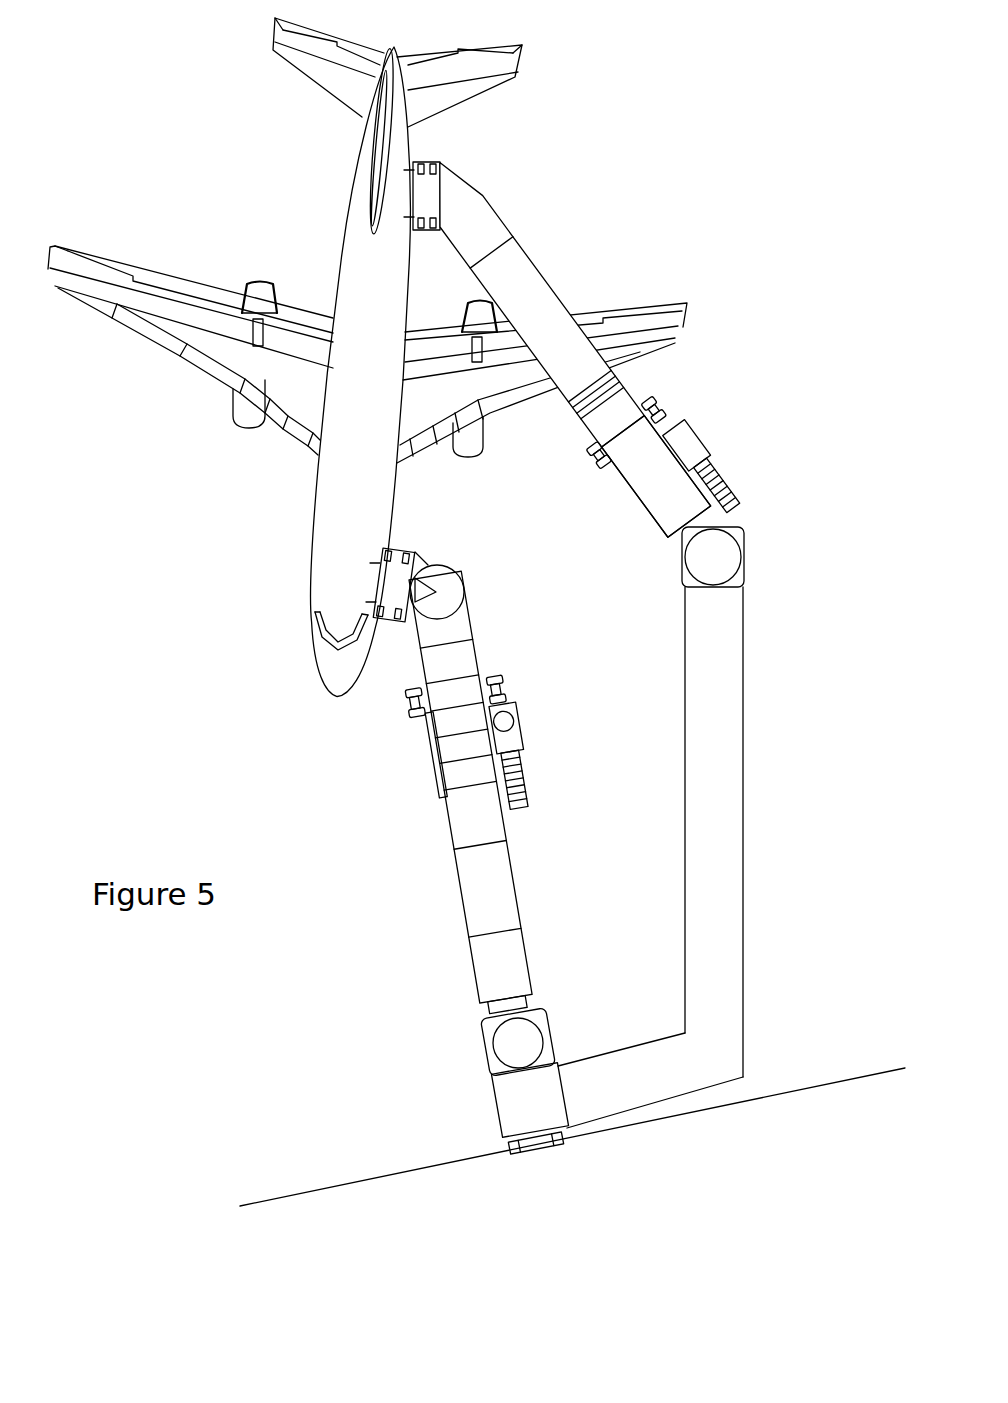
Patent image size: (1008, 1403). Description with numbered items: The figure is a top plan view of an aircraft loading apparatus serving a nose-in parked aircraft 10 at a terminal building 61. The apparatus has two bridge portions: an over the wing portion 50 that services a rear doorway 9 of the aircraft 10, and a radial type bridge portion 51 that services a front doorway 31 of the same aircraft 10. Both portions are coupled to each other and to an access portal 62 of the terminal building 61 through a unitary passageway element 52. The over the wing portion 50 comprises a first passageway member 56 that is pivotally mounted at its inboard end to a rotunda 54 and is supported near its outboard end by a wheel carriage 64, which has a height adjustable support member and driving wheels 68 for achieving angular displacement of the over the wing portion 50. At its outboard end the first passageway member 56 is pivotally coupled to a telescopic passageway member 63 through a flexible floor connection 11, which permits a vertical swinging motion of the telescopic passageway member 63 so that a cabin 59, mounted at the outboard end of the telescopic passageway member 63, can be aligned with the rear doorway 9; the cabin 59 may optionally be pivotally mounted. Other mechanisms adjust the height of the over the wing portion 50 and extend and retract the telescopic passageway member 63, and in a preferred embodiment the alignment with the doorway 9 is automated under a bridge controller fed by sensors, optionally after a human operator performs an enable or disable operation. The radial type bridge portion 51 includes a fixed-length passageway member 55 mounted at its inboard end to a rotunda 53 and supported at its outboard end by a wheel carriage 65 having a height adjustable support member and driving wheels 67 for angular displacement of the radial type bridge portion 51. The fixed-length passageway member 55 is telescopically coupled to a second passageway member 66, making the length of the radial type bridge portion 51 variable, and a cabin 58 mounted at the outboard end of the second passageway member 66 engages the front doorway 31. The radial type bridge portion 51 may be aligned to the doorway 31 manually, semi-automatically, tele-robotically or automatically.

The rear doorway 9 is at (413, 180).
The nose-in parked aircraft 10 is at (363, 336).
The flexible floor connection 11 is at (595, 395).
The front doorway 31 is at (378, 583).
The over the wing portion 50 is at (562, 188).
The radial type bridge portion 51 is at (385, 836).
The unitary passageway element 52 is at (620, 872).
The rotunda 53 is at (518, 1040).
The rotunda 54 is at (723, 567).
The fixed-length passageway member 55 is at (474, 792).
The first passageway member 56 is at (656, 477).
The cabin 58 is at (407, 551).
The cabin 59 is at (441, 165).
The terminal building 61 is at (795, 1162).
The access portal 62 is at (532, 1152).
The telescopic passageway member 63 is at (571, 347).
The wheel carriage 64 is at (703, 468).
The wheel carriage 65 is at (511, 756).
The second passageway member 66 is at (417, 640).
The driving wheels 67 is at (462, 737).
The driving wheels 68 is at (598, 455).